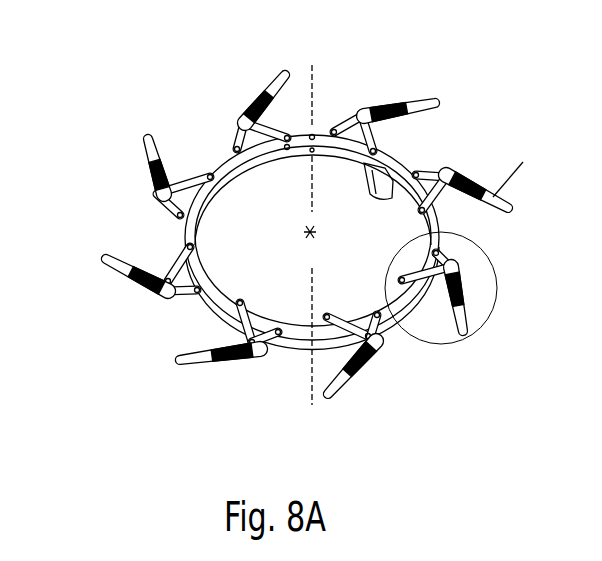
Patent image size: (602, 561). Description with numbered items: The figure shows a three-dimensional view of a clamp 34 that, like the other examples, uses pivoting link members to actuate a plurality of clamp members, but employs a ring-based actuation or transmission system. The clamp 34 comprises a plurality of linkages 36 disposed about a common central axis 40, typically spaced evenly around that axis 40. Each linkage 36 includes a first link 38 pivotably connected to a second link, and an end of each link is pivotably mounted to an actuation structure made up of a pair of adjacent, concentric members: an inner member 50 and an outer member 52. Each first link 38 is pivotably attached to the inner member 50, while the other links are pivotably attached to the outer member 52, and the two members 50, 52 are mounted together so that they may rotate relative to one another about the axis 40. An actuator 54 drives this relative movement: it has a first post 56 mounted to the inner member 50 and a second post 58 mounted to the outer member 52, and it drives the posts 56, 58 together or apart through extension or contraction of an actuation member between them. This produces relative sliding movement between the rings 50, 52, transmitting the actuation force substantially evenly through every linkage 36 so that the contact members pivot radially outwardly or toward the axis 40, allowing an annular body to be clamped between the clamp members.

The clamp 34 is at (147, 329).
The linkage 36 is at (488, 256).
The first link 38 is at (448, 177).
The central axis 40 is at (315, 80).
The inner member 50 is at (230, 153).
The outer member 52 is at (217, 158).
The actuator 54 is at (383, 195).
The first post 56 is at (366, 181).
The second post 58 is at (290, 163).